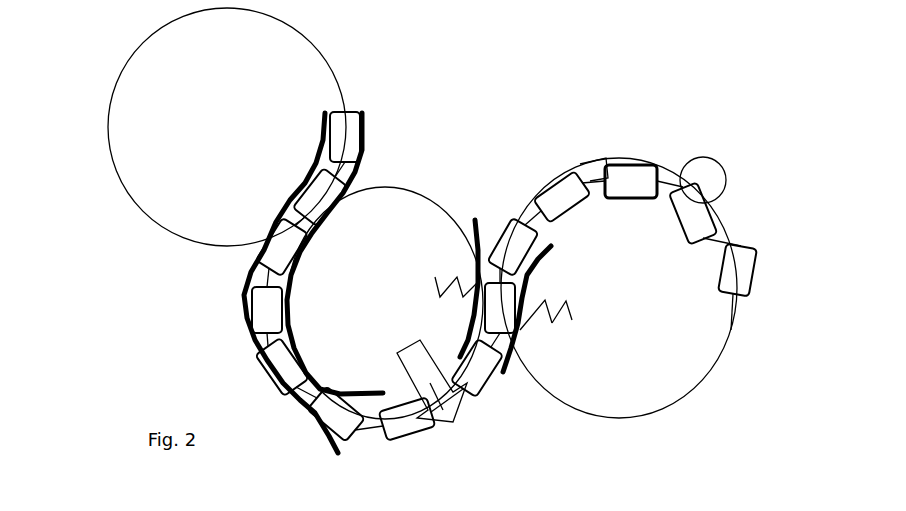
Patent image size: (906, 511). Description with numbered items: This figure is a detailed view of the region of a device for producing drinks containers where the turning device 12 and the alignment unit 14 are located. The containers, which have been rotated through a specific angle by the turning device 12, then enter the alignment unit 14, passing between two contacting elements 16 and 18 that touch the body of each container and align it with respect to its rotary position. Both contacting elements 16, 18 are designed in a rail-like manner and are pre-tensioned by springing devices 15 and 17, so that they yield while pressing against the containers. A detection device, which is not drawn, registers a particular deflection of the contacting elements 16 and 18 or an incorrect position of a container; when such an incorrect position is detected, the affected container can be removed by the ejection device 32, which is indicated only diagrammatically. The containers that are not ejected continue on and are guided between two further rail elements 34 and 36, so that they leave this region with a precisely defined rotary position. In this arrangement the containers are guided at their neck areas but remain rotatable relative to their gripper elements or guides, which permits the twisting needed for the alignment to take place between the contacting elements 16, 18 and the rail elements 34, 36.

The turning device 12 is at (623, 265).
The alignment unit 14 is at (495, 218).
The springing device 15 is at (566, 320).
The contacting element 16 is at (521, 332).
The springing device 17 is at (435, 277).
The contacting element 18 is at (477, 253).
The ejection device 32 is at (453, 420).
The rail element 34 is at (245, 312).
The rail element 36 is at (367, 418).